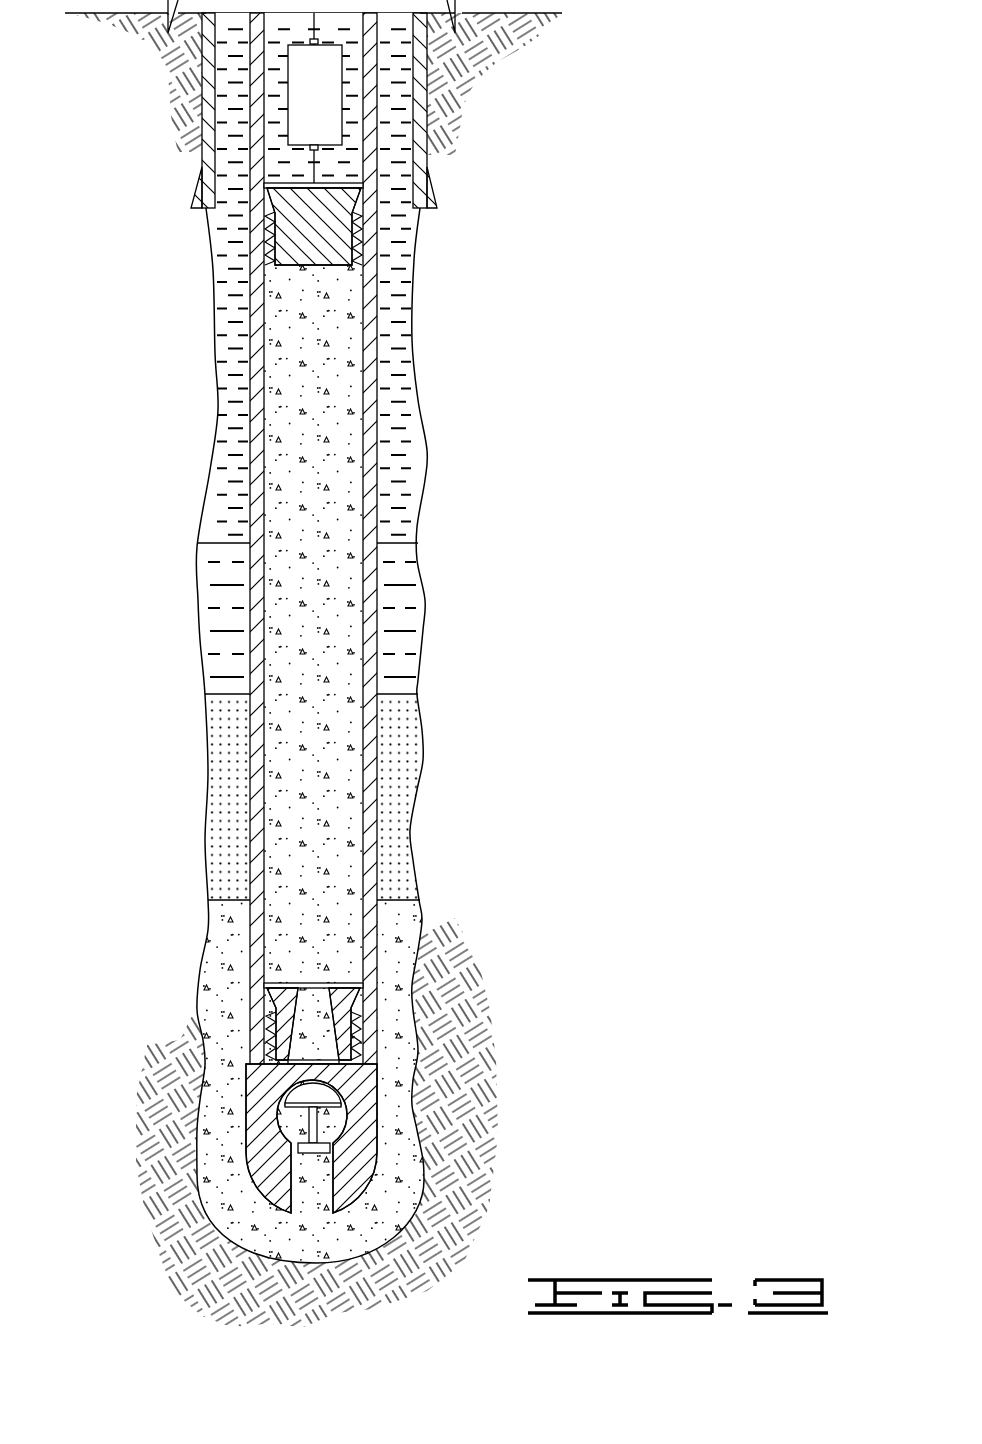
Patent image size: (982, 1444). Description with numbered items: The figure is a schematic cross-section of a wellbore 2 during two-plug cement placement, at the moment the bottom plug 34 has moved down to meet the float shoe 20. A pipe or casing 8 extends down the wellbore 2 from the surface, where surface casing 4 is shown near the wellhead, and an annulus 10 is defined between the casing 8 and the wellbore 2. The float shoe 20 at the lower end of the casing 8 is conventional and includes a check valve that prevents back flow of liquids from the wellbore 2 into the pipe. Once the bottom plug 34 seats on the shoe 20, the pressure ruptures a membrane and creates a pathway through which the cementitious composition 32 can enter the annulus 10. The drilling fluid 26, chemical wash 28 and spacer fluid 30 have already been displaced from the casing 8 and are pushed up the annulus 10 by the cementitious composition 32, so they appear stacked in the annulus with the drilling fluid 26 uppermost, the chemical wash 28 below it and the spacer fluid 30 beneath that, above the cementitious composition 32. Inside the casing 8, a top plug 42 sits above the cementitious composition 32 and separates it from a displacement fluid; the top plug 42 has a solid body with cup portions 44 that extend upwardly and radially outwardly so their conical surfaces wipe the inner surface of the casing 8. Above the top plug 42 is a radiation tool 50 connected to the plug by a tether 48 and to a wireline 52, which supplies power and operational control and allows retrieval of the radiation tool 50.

The wellbore 2 is at (413, 340).
The surface casing 4 is at (420, 160).
The casing 8 is at (368, 625).
The annulus 10 is at (220, 497).
The float shoe 20 is at (250, 1183).
The drilling fluid 26 is at (233, 385).
The chemical wash 28 is at (218, 643).
The spacer fluid 30 is at (225, 825).
The cementitious composition 32 is at (338, 480).
The bottom plug 34 is at (352, 1007).
The top plug 42 is at (302, 228).
The cup portions 44 is at (363, 220).
The tether 48 is at (313, 167).
The radiation tool 50 is at (330, 113).
The wireline 52 is at (313, 33).